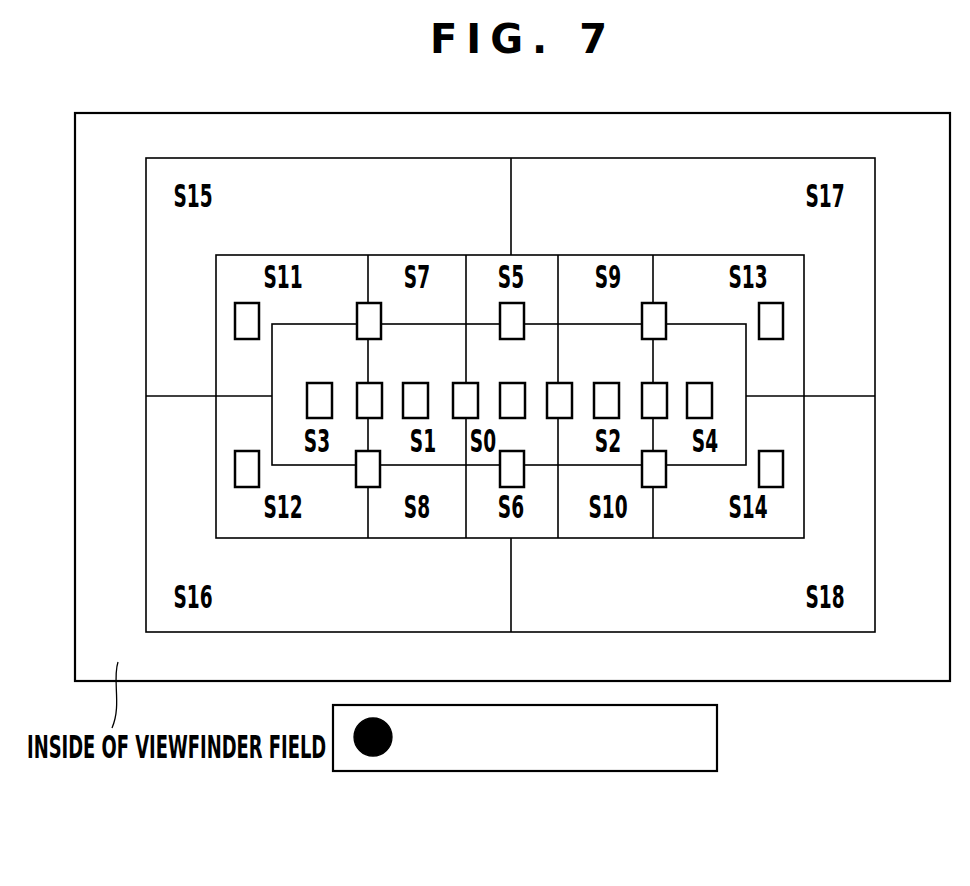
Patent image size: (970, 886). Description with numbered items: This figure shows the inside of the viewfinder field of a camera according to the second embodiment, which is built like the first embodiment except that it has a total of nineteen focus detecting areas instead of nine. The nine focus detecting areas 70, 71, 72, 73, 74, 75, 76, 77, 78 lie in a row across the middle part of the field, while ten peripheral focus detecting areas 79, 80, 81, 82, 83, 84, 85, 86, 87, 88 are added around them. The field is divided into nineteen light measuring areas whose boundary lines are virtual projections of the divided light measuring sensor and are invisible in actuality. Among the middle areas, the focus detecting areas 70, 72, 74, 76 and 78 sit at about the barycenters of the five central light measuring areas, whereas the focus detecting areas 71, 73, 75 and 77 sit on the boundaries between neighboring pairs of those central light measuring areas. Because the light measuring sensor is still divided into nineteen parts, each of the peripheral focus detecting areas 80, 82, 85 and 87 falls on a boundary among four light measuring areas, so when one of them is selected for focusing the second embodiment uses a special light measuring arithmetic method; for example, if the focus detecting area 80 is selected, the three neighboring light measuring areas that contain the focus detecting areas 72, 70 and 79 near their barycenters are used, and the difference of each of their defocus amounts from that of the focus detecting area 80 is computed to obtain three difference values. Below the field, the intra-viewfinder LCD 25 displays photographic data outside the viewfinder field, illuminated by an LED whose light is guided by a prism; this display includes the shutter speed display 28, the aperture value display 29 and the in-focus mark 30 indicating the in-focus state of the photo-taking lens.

The intra-viewfinder LCD 25 is at (697, 762).
The shutter speed display 28 is at (517, 757).
The aperture value display 29 is at (637, 757).
The in-focus mark 30 is at (373, 757).
The focus detecting area 70 is at (319, 393).
The focus detecting area 71 is at (369, 393).
The focus detecting area 72 is at (414, 393).
The focus detecting area 73 is at (465, 393).
The focus detecting area 74 is at (511, 393).
The focus detecting area 75 is at (558, 393).
The focus detecting area 76 is at (604, 393).
The focus detecting area 77 is at (653, 393).
The focus detecting area 78 is at (698, 393).
The peripheral focus detecting area 79 is at (234, 323).
The peripheral focus detecting area 80 is at (361, 303).
The peripheral focus detecting area 81 is at (522, 303).
The peripheral focus detecting area 82 is at (658, 303).
The peripheral focus detecting area 83 is at (784, 320).
The peripheral focus detecting area 84 is at (234, 470).
The peripheral focus detecting area 85 is at (366, 488).
The peripheral focus detecting area 86 is at (519, 488).
The peripheral focus detecting area 87 is at (658, 488).
The peripheral focus detecting area 88 is at (784, 472).